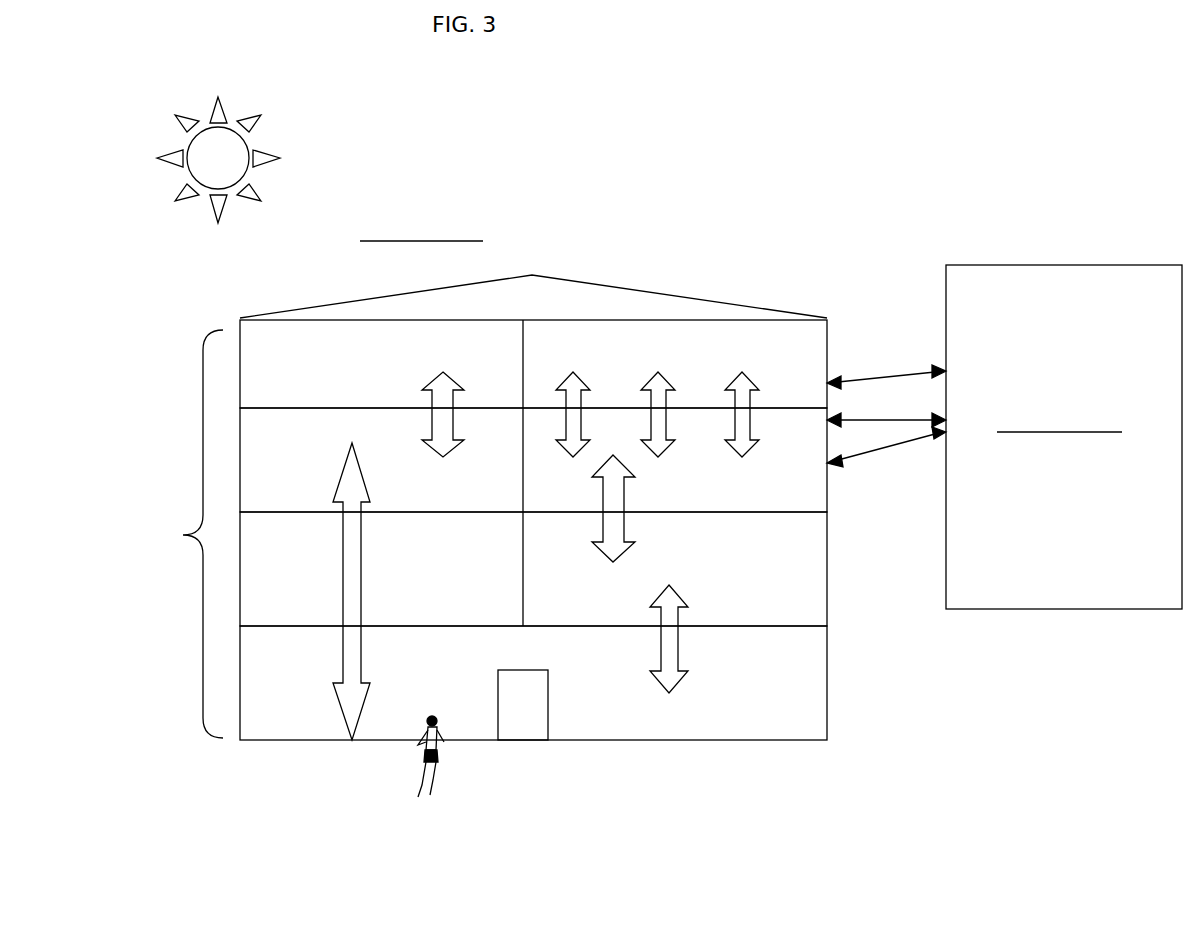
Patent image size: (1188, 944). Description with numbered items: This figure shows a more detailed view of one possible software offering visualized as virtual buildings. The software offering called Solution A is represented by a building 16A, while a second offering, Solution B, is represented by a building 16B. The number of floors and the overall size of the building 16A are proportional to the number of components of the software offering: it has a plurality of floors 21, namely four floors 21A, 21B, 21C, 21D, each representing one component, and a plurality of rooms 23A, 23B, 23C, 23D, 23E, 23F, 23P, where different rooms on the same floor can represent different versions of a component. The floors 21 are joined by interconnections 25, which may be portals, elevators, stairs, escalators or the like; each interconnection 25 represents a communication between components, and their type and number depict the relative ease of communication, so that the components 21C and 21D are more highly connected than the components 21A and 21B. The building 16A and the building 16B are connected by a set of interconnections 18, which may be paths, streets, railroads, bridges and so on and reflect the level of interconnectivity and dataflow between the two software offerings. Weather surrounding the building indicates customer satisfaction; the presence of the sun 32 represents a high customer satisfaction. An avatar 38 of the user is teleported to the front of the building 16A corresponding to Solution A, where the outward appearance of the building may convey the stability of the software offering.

The sun 32 is at (215, 145).
The building 16A is at (644, 172).
The building 16B is at (1081, 197).
The plurality of floors 21 is at (184, 534).
The floor 21A is at (300, 701).
The floor 21B is at (310, 582).
The floor 21C is at (300, 484).
The floor 21D is at (312, 376).
The room 23A is at (805, 685).
The room 23B is at (498, 597).
The room 23C is at (793, 562).
The room 23D is at (393, 478).
The room 23E is at (792, 478).
The room 23F is at (323, 337).
The room 23P is at (698, 348).
The interconnection 25 is at (442, 373).
The interconnection 18 is at (852, 378).
The avatar 38 is at (428, 703).